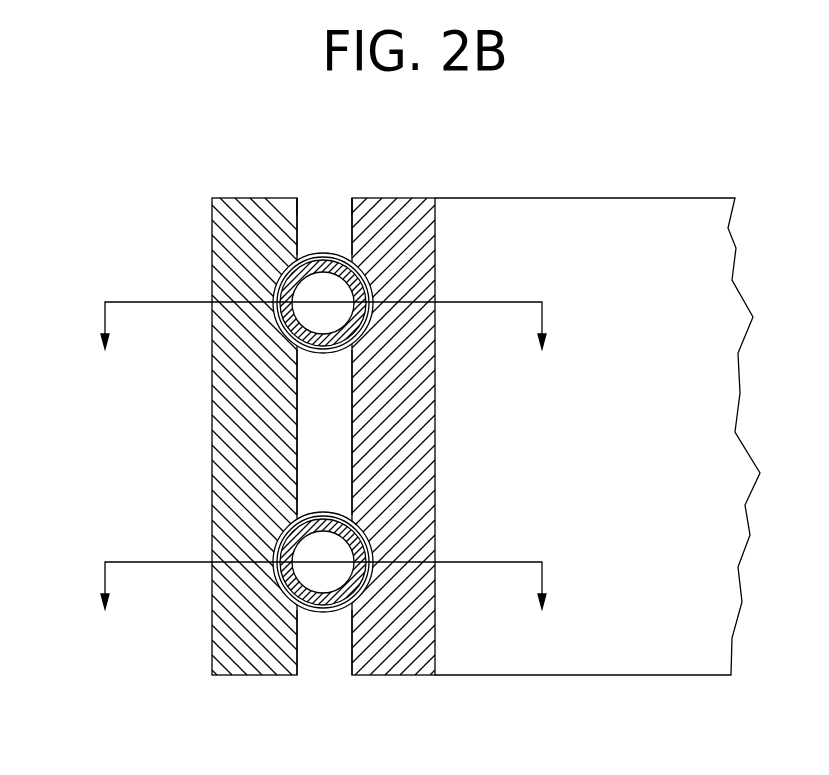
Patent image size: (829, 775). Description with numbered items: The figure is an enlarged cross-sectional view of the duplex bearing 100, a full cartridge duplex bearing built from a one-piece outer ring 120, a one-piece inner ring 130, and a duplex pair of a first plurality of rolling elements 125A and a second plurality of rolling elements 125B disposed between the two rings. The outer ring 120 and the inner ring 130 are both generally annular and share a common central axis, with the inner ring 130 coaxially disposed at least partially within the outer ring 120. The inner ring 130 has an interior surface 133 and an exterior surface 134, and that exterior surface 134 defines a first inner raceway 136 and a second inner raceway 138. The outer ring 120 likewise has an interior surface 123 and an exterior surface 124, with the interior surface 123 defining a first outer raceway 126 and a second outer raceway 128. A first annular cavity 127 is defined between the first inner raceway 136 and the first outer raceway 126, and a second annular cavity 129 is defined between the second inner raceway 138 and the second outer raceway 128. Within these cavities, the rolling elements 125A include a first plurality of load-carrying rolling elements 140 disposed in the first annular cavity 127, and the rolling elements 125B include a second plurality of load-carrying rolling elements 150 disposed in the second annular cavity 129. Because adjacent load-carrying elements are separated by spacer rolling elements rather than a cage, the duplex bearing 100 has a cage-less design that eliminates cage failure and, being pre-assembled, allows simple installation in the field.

The duplex bearing 100 is at (194, 130).
The outer ring 120 is at (212, 434).
The interior surface 123 is at (298, 212).
The exterior surface 124 is at (212, 388).
The first plurality of rolling elements 125A is at (332, 512).
The second plurality of rolling elements 125B is at (338, 358).
The first outer raceway 126 is at (275, 506).
The first annular cavity 127 is at (340, 614).
The second outer raceway 128 is at (305, 316).
The second annular cavity 129 is at (313, 254).
The inner ring 130 is at (437, 222).
The interior surface 133 is at (664, 614).
The exterior surface 134 is at (349, 218).
The first inner raceway 136 is at (406, 538).
The second inner raceway 138 is at (362, 343).
The first plurality of load-carrying rolling elements 140 is at (313, 614).
The second plurality of load-carrying rolling elements 150 is at (310, 405).